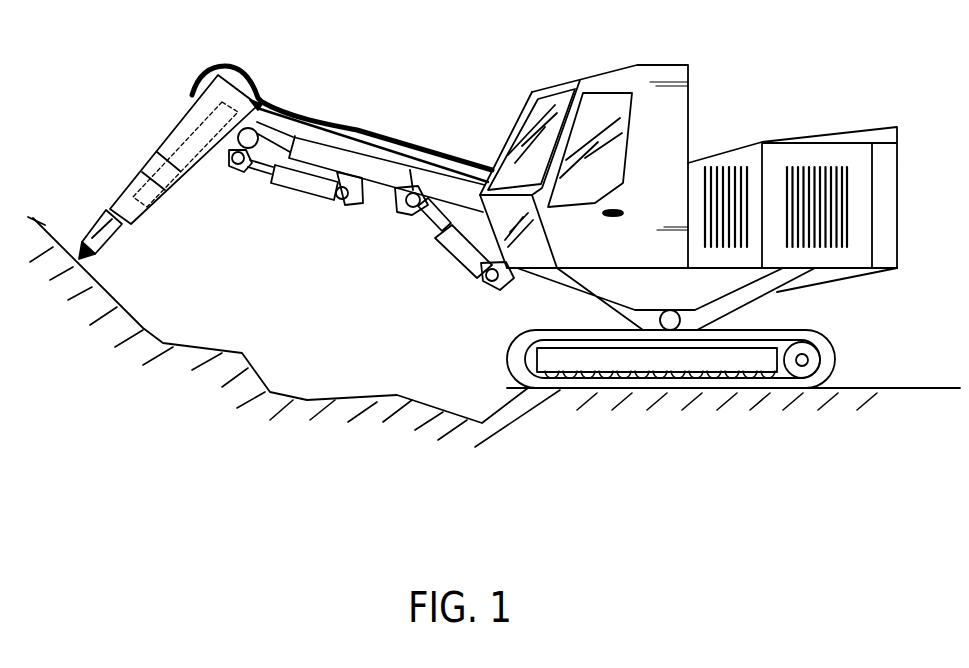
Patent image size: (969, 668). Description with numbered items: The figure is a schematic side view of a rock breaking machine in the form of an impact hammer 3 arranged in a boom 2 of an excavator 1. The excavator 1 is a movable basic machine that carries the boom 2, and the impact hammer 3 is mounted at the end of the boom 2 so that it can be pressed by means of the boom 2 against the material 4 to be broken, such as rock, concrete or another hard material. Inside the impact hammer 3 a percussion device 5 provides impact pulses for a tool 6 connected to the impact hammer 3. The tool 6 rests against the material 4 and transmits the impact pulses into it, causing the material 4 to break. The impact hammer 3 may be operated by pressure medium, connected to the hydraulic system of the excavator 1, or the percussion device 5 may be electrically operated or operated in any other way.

The excavator 1 is at (746, 46).
The boom 2 is at (317, 147).
The impact hammer 3 is at (156, 122).
The material 4 is at (75, 313).
The percussion device 5 is at (199, 140).
The tool 6 is at (90, 233).